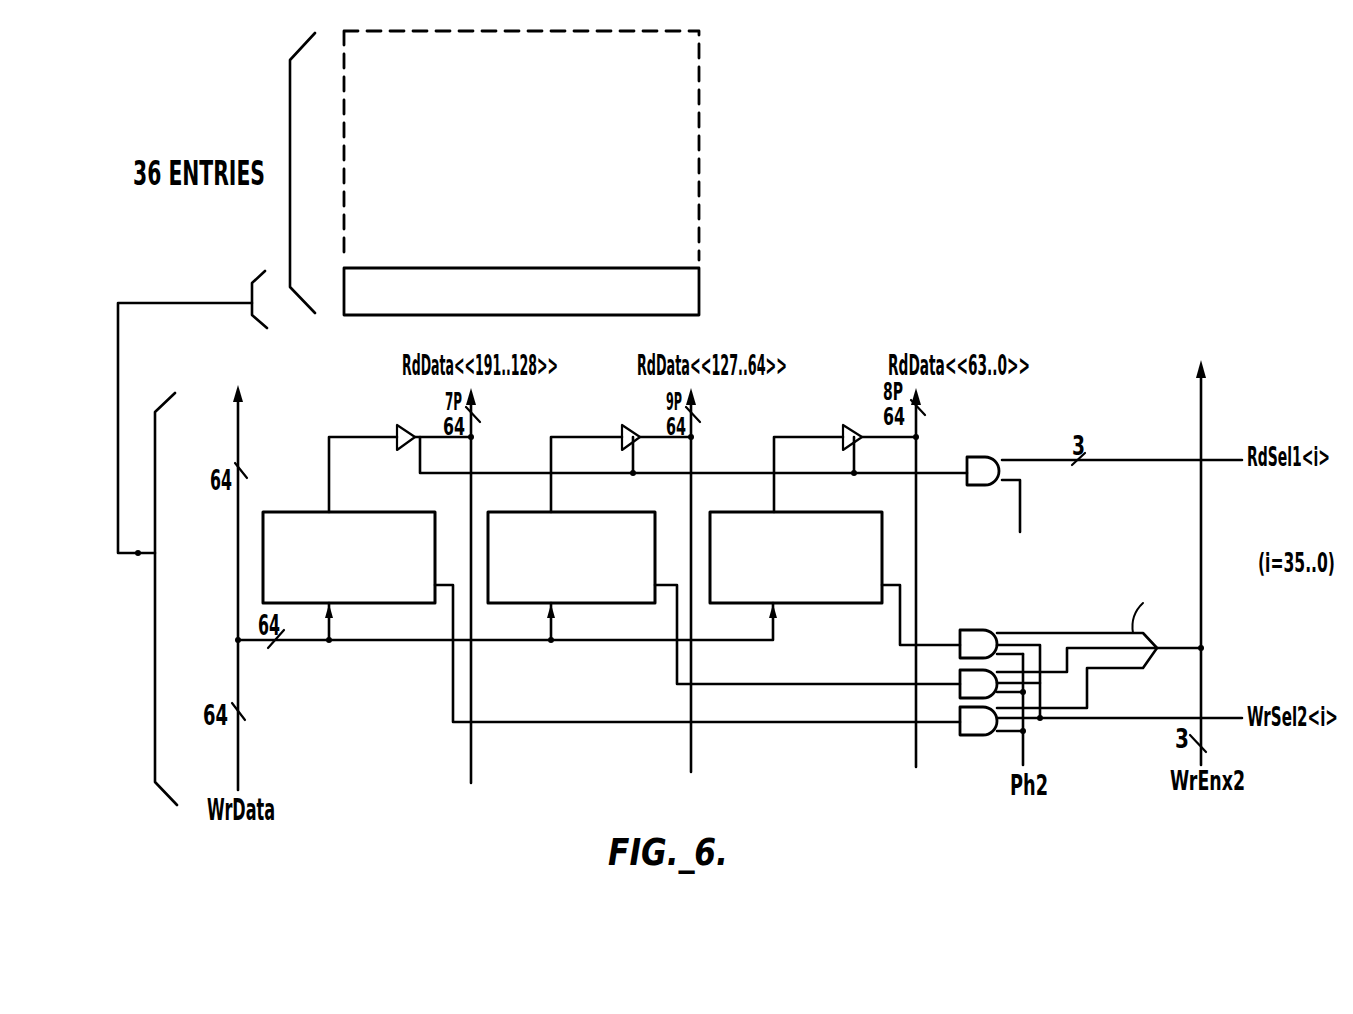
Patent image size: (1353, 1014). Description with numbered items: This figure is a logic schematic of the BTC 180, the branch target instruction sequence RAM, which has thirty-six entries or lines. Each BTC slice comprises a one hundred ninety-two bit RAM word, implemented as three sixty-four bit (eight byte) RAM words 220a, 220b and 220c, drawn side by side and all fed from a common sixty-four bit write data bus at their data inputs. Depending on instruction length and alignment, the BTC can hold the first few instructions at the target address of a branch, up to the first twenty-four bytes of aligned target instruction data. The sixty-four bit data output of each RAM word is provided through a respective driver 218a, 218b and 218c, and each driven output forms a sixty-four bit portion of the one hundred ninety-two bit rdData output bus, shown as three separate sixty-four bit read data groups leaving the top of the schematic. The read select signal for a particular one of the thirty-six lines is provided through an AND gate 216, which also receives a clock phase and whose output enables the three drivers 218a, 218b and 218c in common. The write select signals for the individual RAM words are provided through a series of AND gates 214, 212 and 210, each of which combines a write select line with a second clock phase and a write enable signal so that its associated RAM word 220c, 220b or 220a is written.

The BTC 180 is at (699, 80).
The driver 218a is at (396, 428).
The driver 218b is at (622, 428).
The driver 218c is at (845, 425).
The 64-bit RAM word 220a is at (400, 507).
The 64-bit RAM word 220b is at (583, 507).
The 64-bit RAM word 220c is at (805, 507).
The AND gate 216 is at (986, 453).
The AND gate 214 is at (990, 630).
The AND gate 212 is at (966, 676).
The AND gate 210 is at (968, 735).